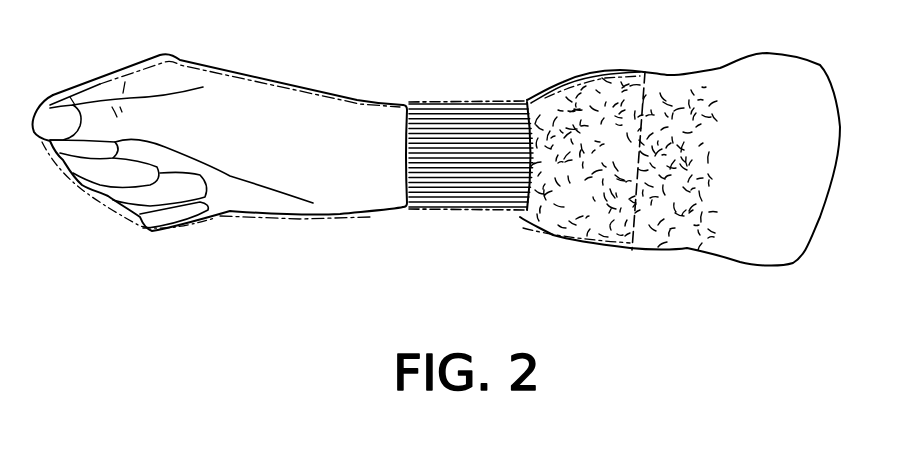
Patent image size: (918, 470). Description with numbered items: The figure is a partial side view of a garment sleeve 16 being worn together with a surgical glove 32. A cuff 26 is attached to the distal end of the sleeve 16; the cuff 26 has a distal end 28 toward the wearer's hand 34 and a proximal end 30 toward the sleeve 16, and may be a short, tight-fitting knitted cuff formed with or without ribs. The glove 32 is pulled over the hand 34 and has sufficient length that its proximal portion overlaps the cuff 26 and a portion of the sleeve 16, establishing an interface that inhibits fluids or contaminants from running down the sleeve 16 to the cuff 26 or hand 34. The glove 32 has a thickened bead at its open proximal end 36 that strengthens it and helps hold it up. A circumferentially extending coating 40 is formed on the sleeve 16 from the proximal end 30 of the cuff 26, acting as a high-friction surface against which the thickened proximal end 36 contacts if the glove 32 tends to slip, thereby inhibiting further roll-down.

The sleeve 16 is at (800, 77).
The cuff 26 is at (455, 200).
The distal end 28 is at (400, 190).
The proximal end 30 is at (517, 113).
The surgical glove 32 is at (320, 90).
The hand 34 is at (368, 115).
The open proximal end 36 is at (643, 70).
The coating 40 is at (575, 207).